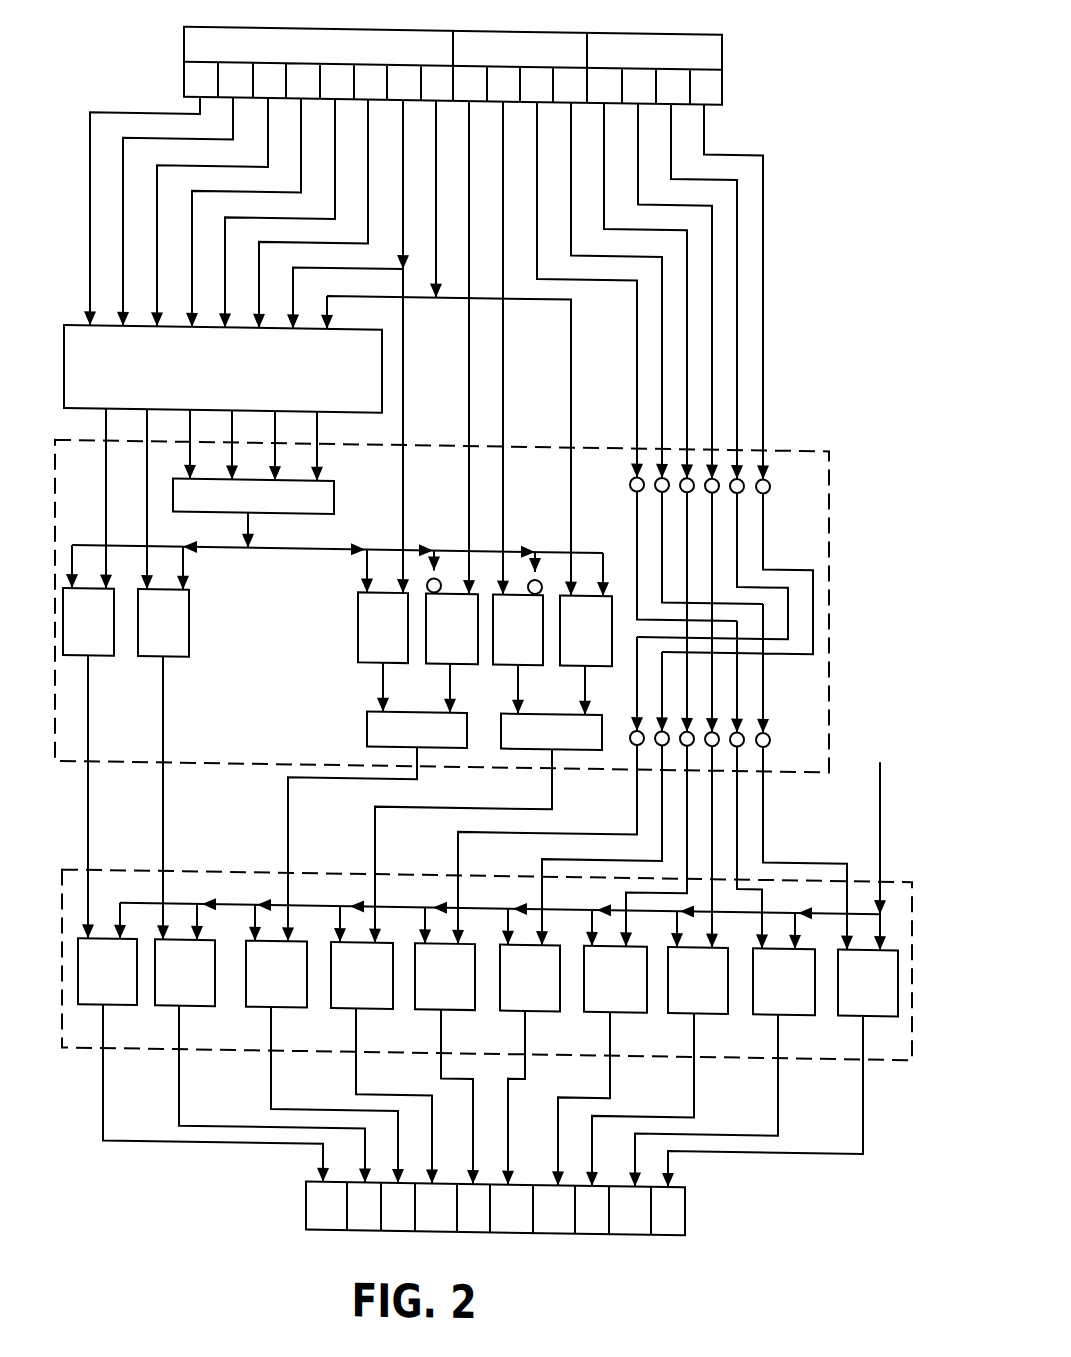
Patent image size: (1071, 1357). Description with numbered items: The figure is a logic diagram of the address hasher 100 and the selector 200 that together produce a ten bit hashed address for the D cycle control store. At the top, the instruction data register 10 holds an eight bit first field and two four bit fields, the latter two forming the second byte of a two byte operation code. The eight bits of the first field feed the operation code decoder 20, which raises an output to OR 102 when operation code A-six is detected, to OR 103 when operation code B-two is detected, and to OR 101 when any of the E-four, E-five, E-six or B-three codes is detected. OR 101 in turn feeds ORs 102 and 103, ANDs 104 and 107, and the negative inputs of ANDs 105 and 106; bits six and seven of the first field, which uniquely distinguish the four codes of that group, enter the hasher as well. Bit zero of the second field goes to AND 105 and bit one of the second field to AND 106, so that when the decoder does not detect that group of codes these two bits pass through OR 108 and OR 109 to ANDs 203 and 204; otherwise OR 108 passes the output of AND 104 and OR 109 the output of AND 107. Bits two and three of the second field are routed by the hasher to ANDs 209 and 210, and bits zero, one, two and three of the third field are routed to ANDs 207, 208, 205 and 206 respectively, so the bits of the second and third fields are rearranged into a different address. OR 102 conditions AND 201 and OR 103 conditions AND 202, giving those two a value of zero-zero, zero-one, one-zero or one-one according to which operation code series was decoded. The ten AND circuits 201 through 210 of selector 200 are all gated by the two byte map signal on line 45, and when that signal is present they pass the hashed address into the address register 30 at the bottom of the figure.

The instruction data register 10 is at (725, 44).
The operation code decoder 20 is at (223, 370).
The address register 30 is at (640, 1225).
The line 45 is at (880, 814).
The address hasher 100 is at (237, 761).
The selector 200 is at (235, 868).
The OR 101 is at (253, 496).
The OR 102 is at (88, 622).
The OR 103 is at (163, 623).
The AND 104 is at (383, 627).
The AND 105 is at (452, 628).
The AND 106 is at (518, 629).
The AND 107 is at (586, 630).
The OR 108 is at (417, 730).
The OR 109 is at (551, 732).
The AND circuit 201 is at (107, 971).
The AND circuit 202 is at (185, 972).
The AND 203 is at (276, 974).
The AND 204 is at (362, 975).
The AND 205 is at (445, 976).
The AND 206 is at (530, 978).
The AND 207 is at (615, 979).
The AND 208 is at (698, 980).
The AND 209 is at (784, 981).
The AND 210 is at (868, 983).